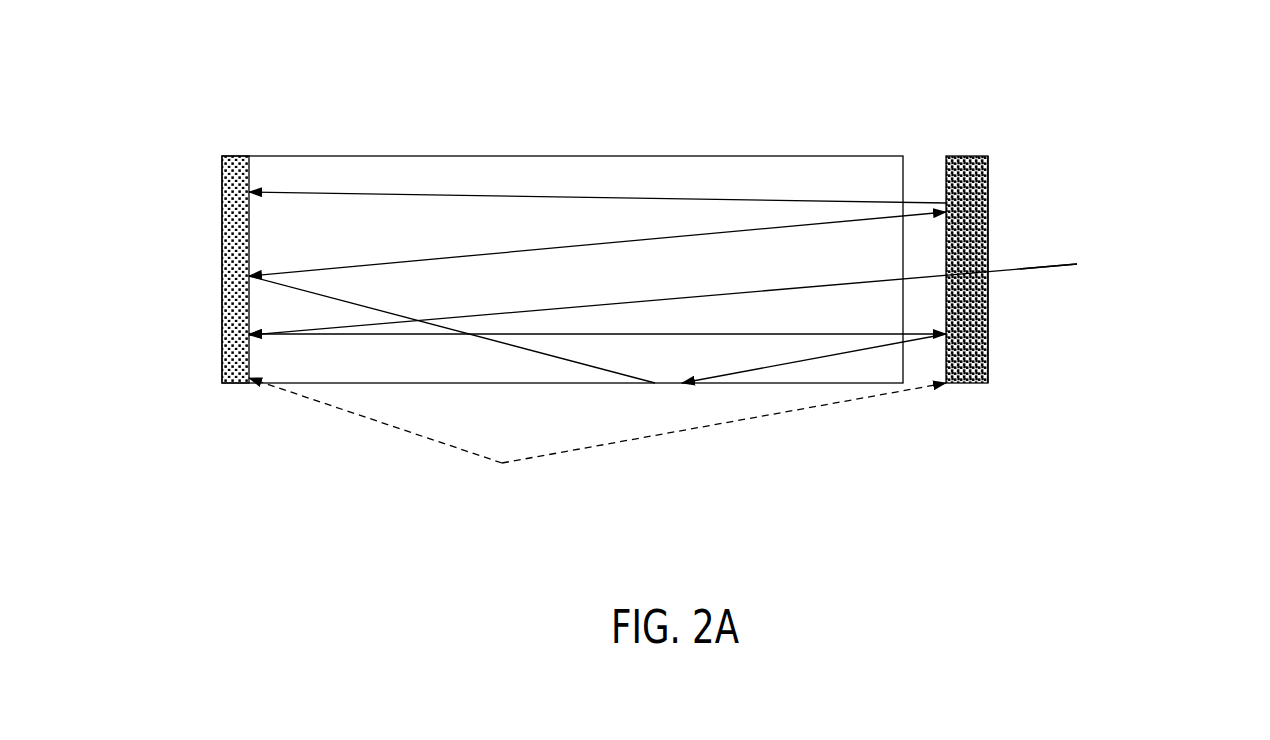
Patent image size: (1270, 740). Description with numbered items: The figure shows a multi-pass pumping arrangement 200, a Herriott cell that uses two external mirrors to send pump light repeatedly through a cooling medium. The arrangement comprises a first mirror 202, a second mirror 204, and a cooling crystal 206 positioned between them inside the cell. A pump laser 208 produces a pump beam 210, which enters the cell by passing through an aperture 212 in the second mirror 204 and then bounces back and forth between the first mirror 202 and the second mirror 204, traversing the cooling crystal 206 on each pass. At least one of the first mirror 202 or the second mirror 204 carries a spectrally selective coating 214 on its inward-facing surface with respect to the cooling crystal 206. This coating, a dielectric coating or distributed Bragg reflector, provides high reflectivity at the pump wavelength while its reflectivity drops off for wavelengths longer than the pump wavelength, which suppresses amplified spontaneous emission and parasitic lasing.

The multi-pass pumping arrangement 200 is at (247, 131).
The first mirror 202 is at (221, 222).
The second mirror 204 is at (992, 160).
The cooling crystal 206 is at (483, 156).
The pump laser 208 is at (1180, 267).
The pump beam 210 is at (1040, 263).
The aperture 212 is at (1002, 284).
The spectrally selective coating 214 is at (583, 497).